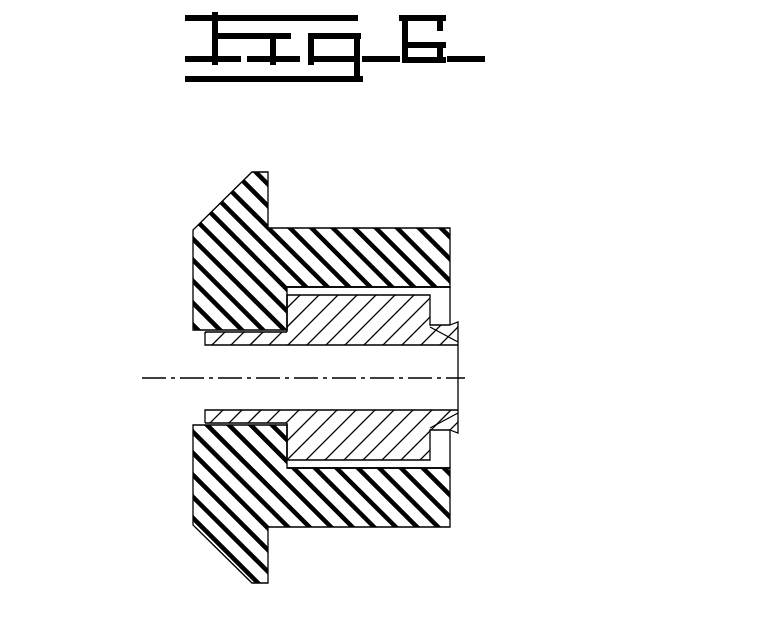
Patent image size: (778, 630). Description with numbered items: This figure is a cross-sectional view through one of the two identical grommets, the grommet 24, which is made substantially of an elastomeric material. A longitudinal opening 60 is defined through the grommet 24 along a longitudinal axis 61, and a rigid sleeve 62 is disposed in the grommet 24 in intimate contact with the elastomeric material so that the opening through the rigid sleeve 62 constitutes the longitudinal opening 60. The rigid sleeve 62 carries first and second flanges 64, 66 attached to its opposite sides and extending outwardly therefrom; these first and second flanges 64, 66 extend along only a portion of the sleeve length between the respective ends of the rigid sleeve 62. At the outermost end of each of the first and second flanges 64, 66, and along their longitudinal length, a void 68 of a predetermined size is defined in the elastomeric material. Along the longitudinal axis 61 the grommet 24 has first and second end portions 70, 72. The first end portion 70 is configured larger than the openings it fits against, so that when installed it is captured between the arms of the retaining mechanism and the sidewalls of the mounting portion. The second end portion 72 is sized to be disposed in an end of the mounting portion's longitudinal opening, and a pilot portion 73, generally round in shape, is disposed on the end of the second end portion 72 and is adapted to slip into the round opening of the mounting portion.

The grommet 24 is at (193, 290).
The longitudinal opening 60 is at (318, 334).
The longitudinal axis 61 is at (518, 378).
The rigid sleeve 62 is at (213, 414).
The first flange 64 is at (353, 315).
The second flange 66 is at (357, 438).
The void 68 is at (313, 290).
The first end portion 70 is at (257, 315).
The second end portion 72 is at (505, 497).
The pilot portion 73 is at (456, 433).